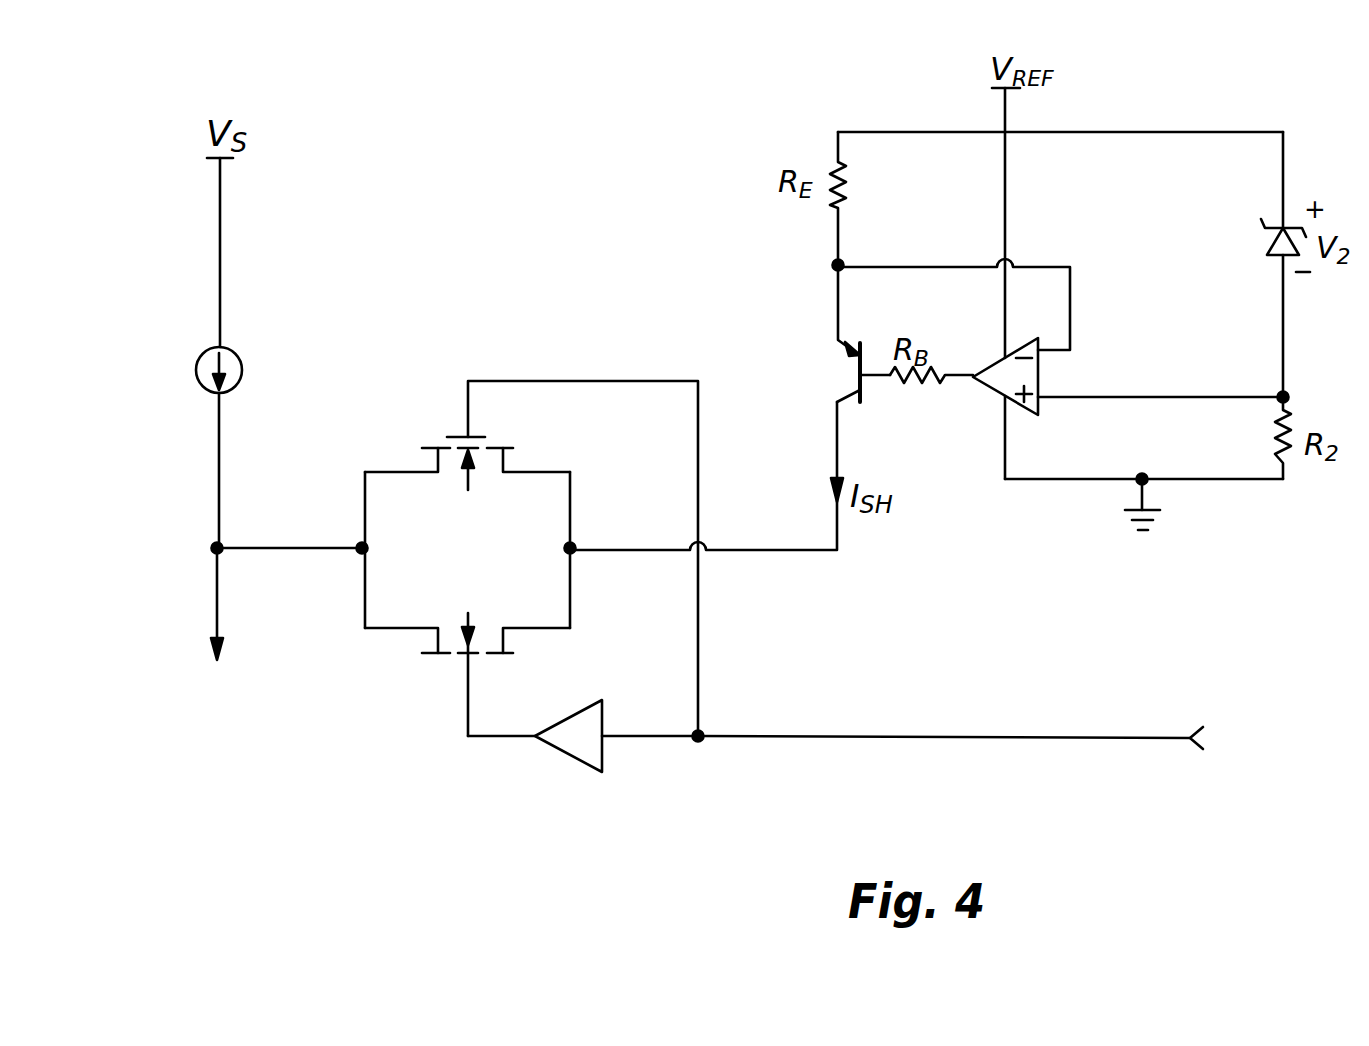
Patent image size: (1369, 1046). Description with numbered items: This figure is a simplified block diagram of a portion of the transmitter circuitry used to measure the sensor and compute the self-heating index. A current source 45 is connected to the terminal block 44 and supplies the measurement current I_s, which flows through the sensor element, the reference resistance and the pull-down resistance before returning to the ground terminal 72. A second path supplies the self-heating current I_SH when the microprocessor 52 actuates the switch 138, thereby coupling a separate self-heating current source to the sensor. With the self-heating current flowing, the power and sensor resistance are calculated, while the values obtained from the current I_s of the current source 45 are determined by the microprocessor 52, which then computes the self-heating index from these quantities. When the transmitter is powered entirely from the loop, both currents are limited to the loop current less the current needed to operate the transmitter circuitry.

The current source 45 is at (233, 351).
The switch 138 is at (532, 306).
The ground terminal 72 is at (1162, 522).
The terminal block 44 is at (220, 628).
The microprocessor 52 is at (998, 733).